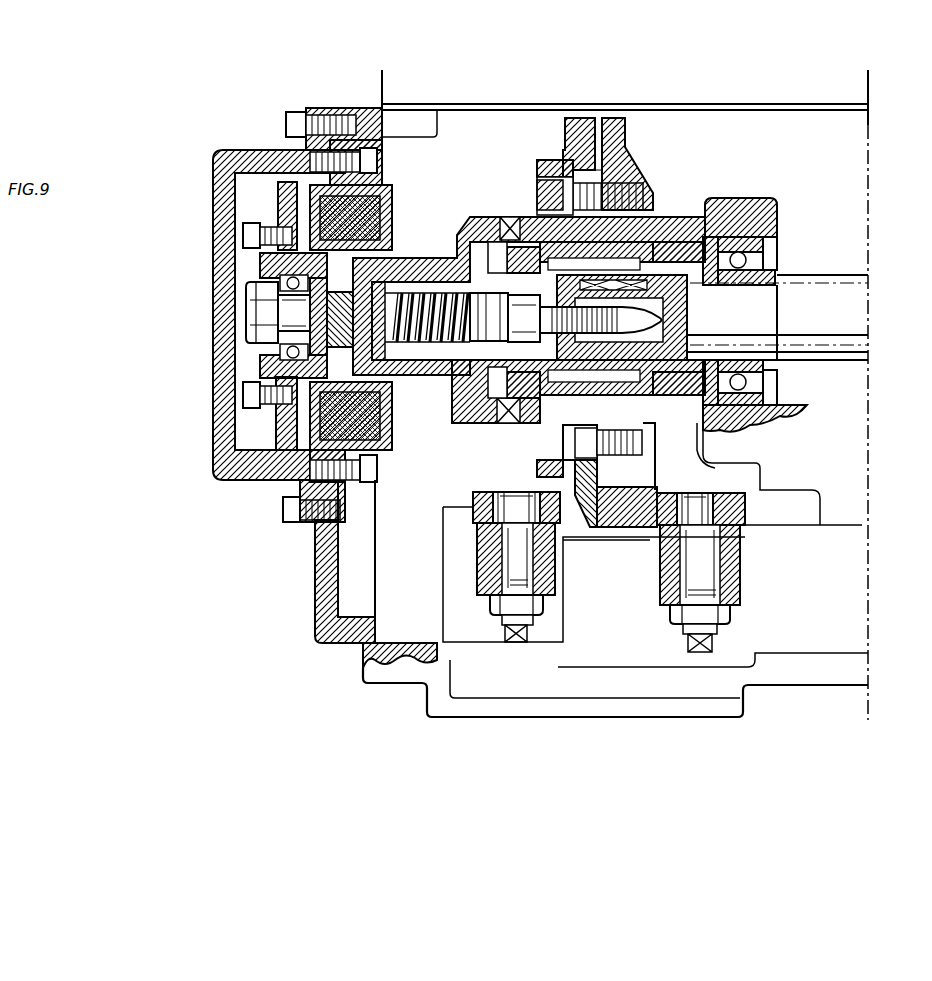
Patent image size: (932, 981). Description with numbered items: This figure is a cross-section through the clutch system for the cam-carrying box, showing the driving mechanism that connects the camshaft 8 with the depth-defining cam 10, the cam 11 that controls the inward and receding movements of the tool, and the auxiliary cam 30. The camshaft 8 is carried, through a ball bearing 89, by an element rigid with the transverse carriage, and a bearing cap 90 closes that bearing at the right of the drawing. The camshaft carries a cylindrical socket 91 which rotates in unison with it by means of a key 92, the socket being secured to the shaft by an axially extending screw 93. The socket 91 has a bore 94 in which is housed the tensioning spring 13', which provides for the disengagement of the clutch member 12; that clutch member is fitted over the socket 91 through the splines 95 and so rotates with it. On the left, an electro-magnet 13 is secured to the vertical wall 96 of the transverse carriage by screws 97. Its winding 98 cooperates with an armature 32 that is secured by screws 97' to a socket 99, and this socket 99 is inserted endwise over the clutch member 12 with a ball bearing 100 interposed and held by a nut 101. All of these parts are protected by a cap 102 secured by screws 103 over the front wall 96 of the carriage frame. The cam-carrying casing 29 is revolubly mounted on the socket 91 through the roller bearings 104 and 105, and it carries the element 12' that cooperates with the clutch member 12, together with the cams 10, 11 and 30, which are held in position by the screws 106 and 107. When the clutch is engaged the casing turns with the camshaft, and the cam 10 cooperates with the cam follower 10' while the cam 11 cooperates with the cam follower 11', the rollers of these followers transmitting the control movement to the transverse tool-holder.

The camshaft 8 is at (845, 286).
The depth-defining cam 10 is at (603, 142).
The cam follower 10' is at (472, 567).
The cam 11 is at (631, 142).
The cam follower 11' is at (728, 572).
The clutch member 12 is at (489, 341).
The element 12' is at (512, 360).
The electro-magnet 13 is at (373, 349).
The tensioning spring 13' is at (388, 291).
The cam-carrying casing 29 is at (640, 200).
The auxiliary cam 30 is at (540, 168).
The armature 32 is at (278, 190).
The ball bearing 89 is at (765, 250).
The bearing cap 90 is at (740, 200).
The cylindrical socket 91 is at (740, 332).
The key 92 is at (640, 270).
The axially extending screw 93 is at (712, 310).
The bore 94 is at (440, 376).
The splines 95 is at (432, 258).
The vertical wall 96 is at (320, 545).
The screws 97 is at (365, 315).
The screws 97' is at (223, 310).
The winding 98 is at (392, 192).
The socket 99 is at (262, 362).
The ball bearing 100 is at (250, 272).
The nut 101 is at (250, 300).
The cap 102 is at (215, 450).
The screws 103 is at (287, 118).
The roller bearing 104 is at (558, 422).
The roller bearing 105 is at (686, 405).
The screws 106 is at (555, 188).
The screws 107 is at (588, 522).